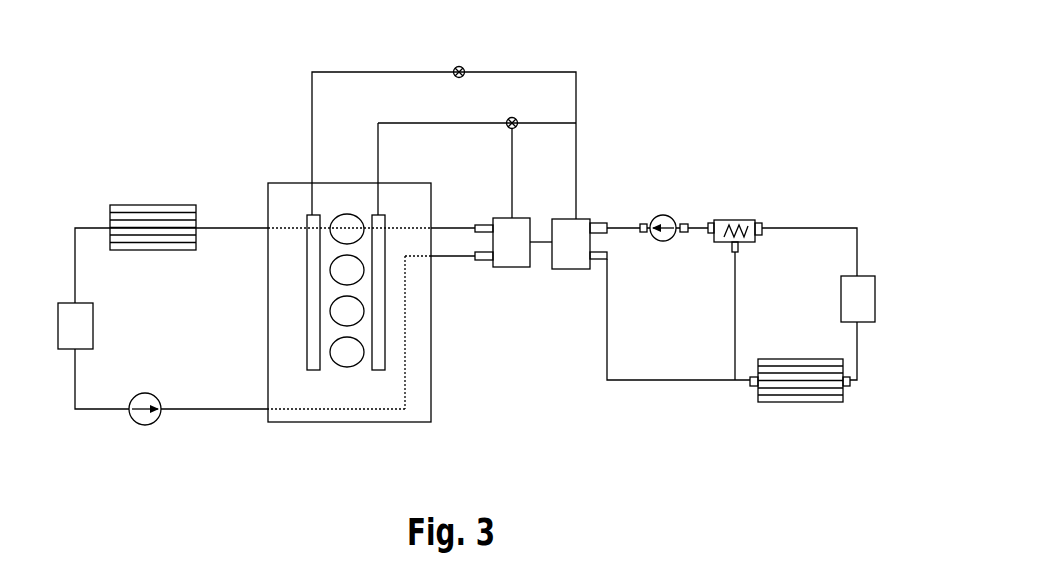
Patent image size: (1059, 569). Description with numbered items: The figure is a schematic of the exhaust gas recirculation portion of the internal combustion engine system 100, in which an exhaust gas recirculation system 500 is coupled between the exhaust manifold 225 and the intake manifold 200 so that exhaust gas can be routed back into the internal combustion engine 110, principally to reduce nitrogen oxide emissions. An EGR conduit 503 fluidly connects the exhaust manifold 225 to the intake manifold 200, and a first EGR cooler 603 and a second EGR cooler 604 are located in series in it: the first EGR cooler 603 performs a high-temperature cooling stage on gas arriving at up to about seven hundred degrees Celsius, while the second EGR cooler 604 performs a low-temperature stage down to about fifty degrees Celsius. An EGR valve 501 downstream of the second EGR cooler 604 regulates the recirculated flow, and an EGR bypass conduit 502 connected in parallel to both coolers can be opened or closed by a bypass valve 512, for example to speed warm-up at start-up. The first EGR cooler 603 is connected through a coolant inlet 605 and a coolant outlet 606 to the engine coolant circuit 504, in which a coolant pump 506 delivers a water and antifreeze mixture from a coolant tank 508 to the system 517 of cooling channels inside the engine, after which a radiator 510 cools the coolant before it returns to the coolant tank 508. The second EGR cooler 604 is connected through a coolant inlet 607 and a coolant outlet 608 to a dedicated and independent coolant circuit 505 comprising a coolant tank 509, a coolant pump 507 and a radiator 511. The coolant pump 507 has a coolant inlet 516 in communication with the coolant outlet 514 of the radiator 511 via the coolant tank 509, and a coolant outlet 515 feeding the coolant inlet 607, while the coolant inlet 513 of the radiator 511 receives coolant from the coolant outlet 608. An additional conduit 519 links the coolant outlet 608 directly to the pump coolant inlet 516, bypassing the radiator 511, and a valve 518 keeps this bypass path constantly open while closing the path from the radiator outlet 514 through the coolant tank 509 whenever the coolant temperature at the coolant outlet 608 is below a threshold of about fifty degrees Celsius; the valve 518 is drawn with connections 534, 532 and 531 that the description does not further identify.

The internal combustion engine system 100 is at (368, 318).
The internal combustion engine 110 is at (322, 393).
The intake manifold 200 is at (308, 339).
The exhaust manifold 225 is at (383, 347).
The exhaust gas recirculation system 500 is at (547, 58).
The EGR valve 501 is at (454, 68).
The EGR bypass conduit 502 is at (557, 120).
The EGR conduit 503 is at (378, 175).
The engine coolant circuit 504 is at (142, 160).
The dedicated coolant circuit 505 is at (798, 173).
The coolant pump 506 is at (135, 422).
The coolant pump 507 is at (668, 213).
The coolant tank 508 is at (57, 332).
The coolant tank 509 is at (872, 280).
The radiator 510 is at (110, 215).
The radiator 511 is at (783, 388).
The bypass valve 512 is at (506, 120).
The coolant inlet 513 is at (750, 380).
The coolant outlet 514 is at (847, 385).
The coolant outlet 515 is at (644, 233).
The coolant inlet 516 is at (684, 233).
The system of cooling channels 517 is at (292, 230).
The valve 518 is at (750, 218).
The additional conduit 519 is at (735, 358).
The heater outlet port 531 is at (737, 248).
The heater port 532 is at (762, 233).
The heater inlet port 534 is at (710, 217).
The first EGR cooler 603 is at (499, 258).
The second EGR cooler 604 is at (555, 265).
The coolant inlet 605 is at (480, 262).
The coolant outlet 606 is at (487, 228).
The coolant inlet 607 is at (605, 223).
The coolant outlet 608 is at (600, 258).